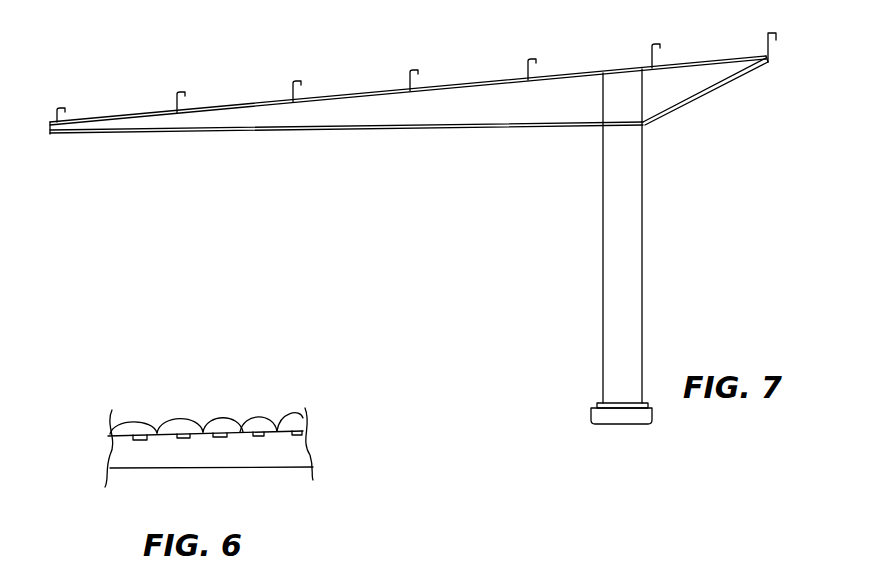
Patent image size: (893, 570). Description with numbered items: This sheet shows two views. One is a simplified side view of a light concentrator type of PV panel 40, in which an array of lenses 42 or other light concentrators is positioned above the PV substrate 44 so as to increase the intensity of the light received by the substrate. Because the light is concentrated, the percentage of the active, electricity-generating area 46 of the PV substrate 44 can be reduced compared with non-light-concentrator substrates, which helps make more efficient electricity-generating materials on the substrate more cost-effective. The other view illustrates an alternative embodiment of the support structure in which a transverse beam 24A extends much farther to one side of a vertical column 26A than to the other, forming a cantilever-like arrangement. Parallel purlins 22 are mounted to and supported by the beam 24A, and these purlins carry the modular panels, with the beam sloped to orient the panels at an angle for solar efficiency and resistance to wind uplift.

In FIG. 7, the purlin 22 is at (778, 39).
In FIG. 7, the beam 24A is at (551, 100).
In FIG. 7, the column 26A is at (628, 271).
In FIG. 6, the light concentrator type of PV panel 40 is at (231, 421).
In FIG. 6, the lens 42 is at (170, 393).
In FIG. 6, the PV substrate 44 is at (230, 455).
In FIG. 6, the active, electricity-generating area 46 is at (263, 437).